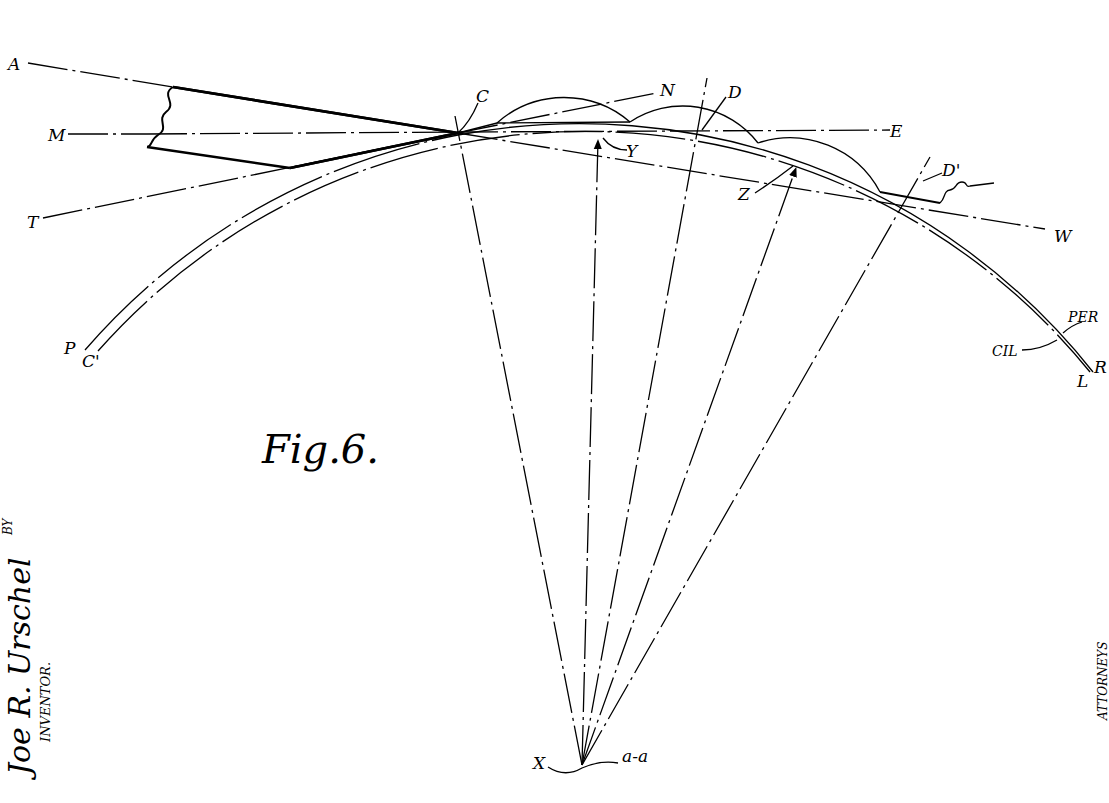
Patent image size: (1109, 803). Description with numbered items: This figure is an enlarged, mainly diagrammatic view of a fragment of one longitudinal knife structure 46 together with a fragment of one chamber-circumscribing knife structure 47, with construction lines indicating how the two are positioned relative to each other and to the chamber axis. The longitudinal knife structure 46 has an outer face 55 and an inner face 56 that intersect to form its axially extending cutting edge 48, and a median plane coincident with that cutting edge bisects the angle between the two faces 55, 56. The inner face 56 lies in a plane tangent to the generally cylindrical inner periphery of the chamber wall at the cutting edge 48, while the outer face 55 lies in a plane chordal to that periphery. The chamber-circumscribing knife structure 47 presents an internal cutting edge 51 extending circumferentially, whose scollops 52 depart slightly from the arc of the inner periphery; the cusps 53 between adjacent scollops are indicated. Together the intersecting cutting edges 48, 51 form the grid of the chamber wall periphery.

The longitudinal knife structure 46 is at (210, 107).
The chamber-circumscribing knife structure 47 is at (950, 188).
The cutting edge 48 is at (458, 133).
The internal cutting edge 51 is at (563, 100).
The scollop 52 is at (738, 124).
The cusp between slices 53 is at (760, 143).
The outer face 55 is at (351, 119).
The inner face 56 is at (375, 150).